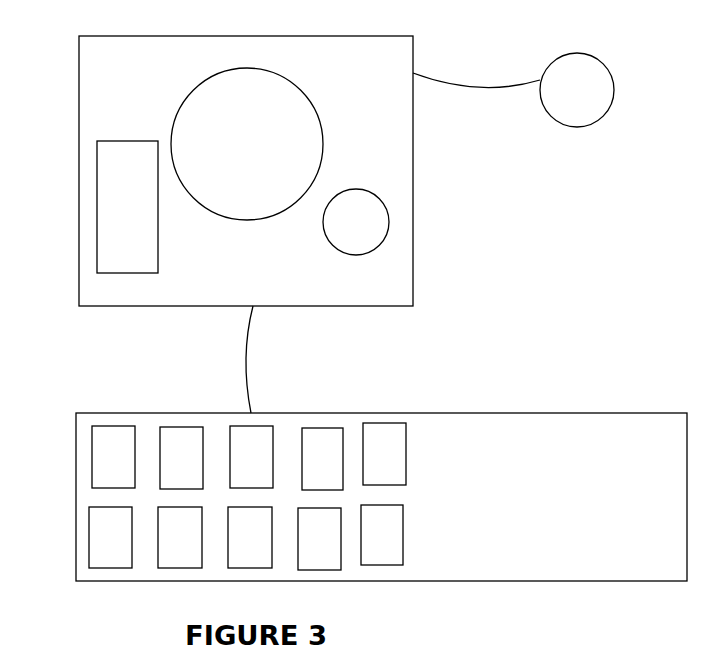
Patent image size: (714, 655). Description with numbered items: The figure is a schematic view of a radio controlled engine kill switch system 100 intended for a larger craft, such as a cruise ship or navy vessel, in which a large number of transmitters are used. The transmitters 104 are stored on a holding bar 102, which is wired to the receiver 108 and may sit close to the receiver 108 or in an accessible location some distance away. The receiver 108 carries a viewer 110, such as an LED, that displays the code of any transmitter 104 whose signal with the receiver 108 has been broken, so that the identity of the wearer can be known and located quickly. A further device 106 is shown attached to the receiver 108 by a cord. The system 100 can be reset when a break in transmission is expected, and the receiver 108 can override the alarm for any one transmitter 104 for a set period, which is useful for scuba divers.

The system 100 is at (358, 304).
The holding bar 102 is at (381, 471).
The transmitter 104 is at (382, 435).
The mouse 106 is at (597, 73).
The receiver 108 is at (392, 259).
The viewer 110 is at (122, 222).